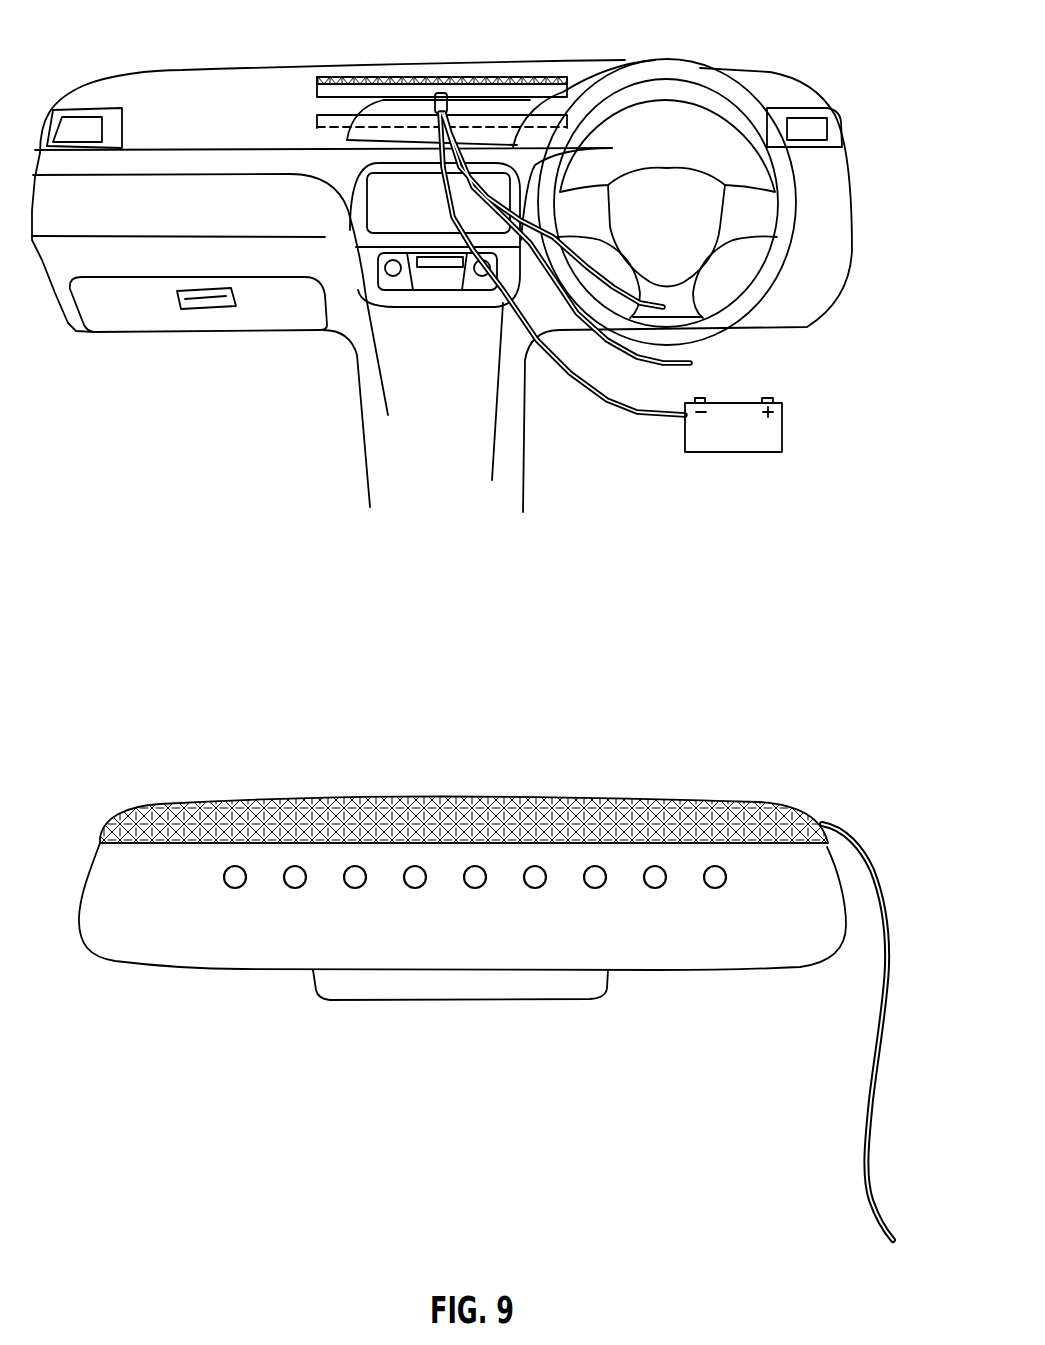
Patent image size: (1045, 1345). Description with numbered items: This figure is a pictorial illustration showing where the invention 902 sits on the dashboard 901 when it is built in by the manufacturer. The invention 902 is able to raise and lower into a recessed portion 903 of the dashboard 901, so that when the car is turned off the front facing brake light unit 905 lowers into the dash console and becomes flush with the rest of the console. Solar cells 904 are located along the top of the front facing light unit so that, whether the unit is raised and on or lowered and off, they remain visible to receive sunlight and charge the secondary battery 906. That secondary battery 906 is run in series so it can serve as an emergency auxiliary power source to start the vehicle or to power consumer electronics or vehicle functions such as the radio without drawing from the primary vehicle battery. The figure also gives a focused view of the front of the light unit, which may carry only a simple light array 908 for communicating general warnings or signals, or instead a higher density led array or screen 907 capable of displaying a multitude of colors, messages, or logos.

The dashboard 901 is at (144, 70).
The invention 902 is at (352, 76).
The recessed portion 903 is at (323, 118).
The solar cells 904 is at (530, 82).
The front facing brake light unit 905 is at (563, 93).
The secondary battery 906 is at (685, 432).
The higher density led array or screen 907 is at (388, 800).
The simple light array 908 is at (293, 888).